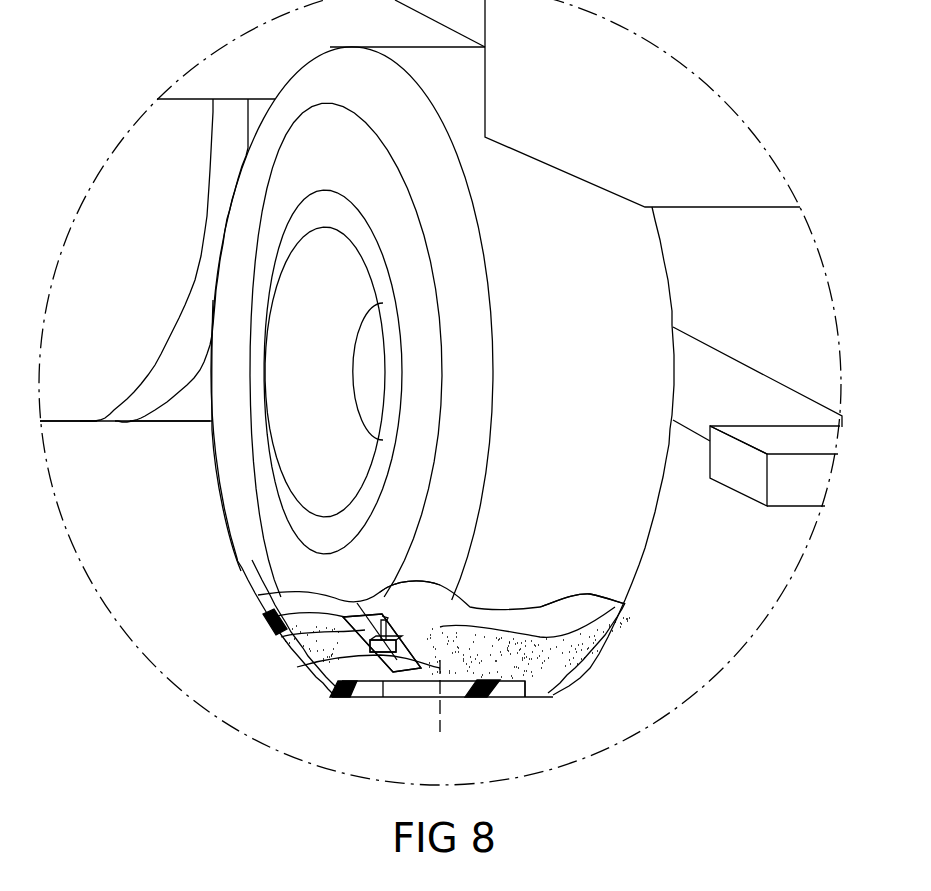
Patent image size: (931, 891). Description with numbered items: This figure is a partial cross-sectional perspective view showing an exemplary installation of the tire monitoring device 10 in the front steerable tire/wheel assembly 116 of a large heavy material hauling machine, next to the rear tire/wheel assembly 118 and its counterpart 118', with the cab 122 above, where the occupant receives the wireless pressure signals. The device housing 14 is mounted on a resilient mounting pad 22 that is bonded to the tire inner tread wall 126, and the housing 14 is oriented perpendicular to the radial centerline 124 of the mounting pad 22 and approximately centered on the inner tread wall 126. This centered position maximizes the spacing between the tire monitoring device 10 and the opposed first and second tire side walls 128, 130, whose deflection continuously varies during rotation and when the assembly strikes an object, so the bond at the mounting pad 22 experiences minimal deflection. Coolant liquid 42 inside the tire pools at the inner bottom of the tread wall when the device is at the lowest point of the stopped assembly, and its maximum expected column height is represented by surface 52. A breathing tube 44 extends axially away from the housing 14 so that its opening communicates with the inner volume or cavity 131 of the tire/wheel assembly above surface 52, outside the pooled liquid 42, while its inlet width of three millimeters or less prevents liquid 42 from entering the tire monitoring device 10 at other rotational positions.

The tire monitoring device 10 is at (404, 613).
The housing 14 is at (281, 637).
The mounting pad 22 is at (297, 667).
The coolant liquid 42 is at (268, 618).
The breathing tube 44 is at (263, 595).
The surface 52 is at (450, 621).
The front steerable tire/wheel assembly 116 is at (247, 512).
The rear tire/wheel assembly 118 is at (94, 448).
The fender inner edge 118' is at (168, 436).
The cab 122 is at (383, 683).
The radial centerline 124 is at (440, 708).
The tire inner tread wall 126 is at (474, 660).
The first tire side wall 128 is at (240, 571).
The second tire side wall 130 is at (593, 615).
The inner volume or cavity 131 is at (398, 583).